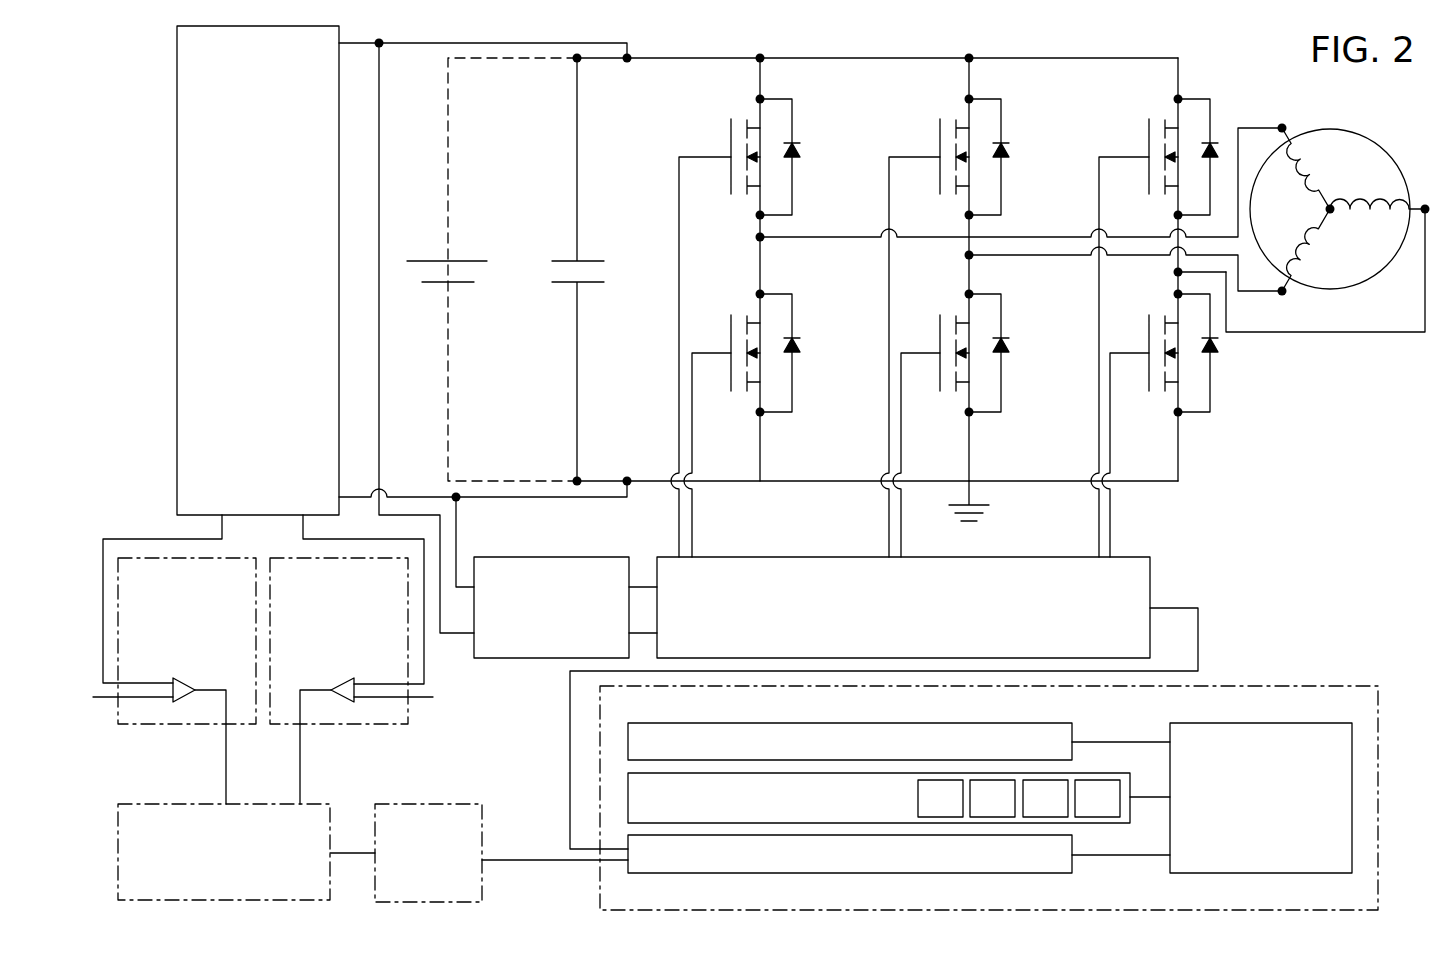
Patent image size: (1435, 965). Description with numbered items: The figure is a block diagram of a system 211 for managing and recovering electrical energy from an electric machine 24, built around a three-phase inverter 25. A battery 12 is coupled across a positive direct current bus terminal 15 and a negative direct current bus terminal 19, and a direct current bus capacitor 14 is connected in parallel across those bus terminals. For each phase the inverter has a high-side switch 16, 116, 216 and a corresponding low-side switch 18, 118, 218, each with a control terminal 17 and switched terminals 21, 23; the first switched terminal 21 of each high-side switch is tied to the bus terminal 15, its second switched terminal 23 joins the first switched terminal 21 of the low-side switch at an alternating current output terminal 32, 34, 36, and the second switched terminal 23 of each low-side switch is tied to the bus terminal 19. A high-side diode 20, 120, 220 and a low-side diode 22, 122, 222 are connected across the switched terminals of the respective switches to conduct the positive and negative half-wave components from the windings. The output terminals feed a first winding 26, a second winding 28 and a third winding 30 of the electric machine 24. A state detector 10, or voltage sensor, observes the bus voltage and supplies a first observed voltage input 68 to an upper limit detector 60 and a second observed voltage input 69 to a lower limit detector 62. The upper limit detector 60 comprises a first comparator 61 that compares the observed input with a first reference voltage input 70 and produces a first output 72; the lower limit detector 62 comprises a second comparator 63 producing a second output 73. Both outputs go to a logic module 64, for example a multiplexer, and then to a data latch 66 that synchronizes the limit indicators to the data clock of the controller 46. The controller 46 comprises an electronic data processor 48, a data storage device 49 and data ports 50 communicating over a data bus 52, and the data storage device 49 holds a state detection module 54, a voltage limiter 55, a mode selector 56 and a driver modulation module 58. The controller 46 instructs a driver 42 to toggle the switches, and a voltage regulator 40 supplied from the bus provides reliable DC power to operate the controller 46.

The state detector 10 is at (243, 343).
The battery 12 is at (472, 261).
The direct current bus capacitor 14 is at (598, 261).
The direct current bus terminal 15 is at (665, 58).
The high-side switch 16 is at (716, 122).
The control terminal 17 is at (693, 158).
The low-side switch 18 is at (717, 408).
The direct current bus terminal 19 is at (704, 352).
The high-side diode 20 is at (795, 130).
The first switched terminal 21 is at (763, 99).
The low-side diode 22 is at (794, 313).
The second switched terminal 23 is at (757, 215).
The electric machine 24 is at (1362, 308).
The inverter 25 is at (795, 48).
The first winding 26 is at (1312, 163).
The second winding 28 is at (1310, 260).
The third winding 30 is at (1370, 212).
The alternating current output terminal 32 is at (1250, 128).
The alternating current output terminal 34 is at (1260, 293).
The alternating current output terminal 36 is at (1400, 333).
The voltage regulator 40 is at (519, 658).
The driver 42 is at (885, 641).
The controller 46 is at (1310, 686).
The electronic data processor 48 is at (1072, 733).
The data storage device 49 is at (1105, 773).
The data ports 50 is at (1072, 865).
The data bus 52 is at (1246, 831).
The state detection module 54 is at (978, 811).
The voltage limiter 55 is at (926, 811).
The mode selector 56 is at (1031, 811).
The driver modulation module 58 is at (1083, 811).
The upper limit detector 60 is at (132, 726).
The first comparator 61 is at (185, 697).
The lower limit detector 62 is at (396, 726).
The second comparator 63 is at (340, 697).
The logic module 64 is at (118, 856).
The data latch 66 is at (482, 804).
The first observed voltage input 68 is at (118, 535).
The second observed voltage input 69 is at (303, 537).
The first reference voltage input 70 is at (93, 697).
The first output 72 is at (224, 785).
The second output 73 is at (298, 785).
The high-side switch 116 is at (925, 122).
The low-side switch 118 is at (926, 408).
The high-side diode 120 is at (1004, 130).
The low-side diode 122 is at (1003, 313).
The system 211 is at (928, 45).
The high-side switch 216 is at (1134, 122).
The low-side switch 218 is at (1136, 408).
The high-side diode 220 is at (1213, 130).
The low-side diode 222 is at (1213, 340).